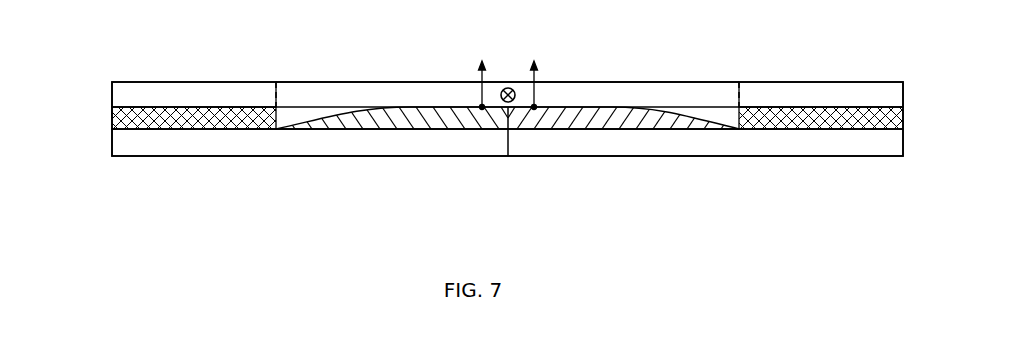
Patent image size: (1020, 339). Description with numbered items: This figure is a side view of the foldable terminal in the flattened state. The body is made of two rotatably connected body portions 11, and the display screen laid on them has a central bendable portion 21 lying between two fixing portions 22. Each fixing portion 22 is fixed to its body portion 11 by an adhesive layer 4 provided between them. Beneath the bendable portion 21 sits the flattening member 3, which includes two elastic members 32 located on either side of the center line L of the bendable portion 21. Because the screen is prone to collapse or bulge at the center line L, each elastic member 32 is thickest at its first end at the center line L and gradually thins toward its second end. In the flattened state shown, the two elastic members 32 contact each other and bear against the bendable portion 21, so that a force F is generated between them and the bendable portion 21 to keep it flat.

The flattening member 3 is at (438, 203).
The adhesive layer 4 is at (135, 120).
The body portion 11 is at (323, 142).
The bendable portion 21 is at (403, 92).
The fixing portion 22 is at (199, 92).
The elastic member 32 is at (465, 120).
The center line L is at (508, 87).
The force F is at (511, 83).